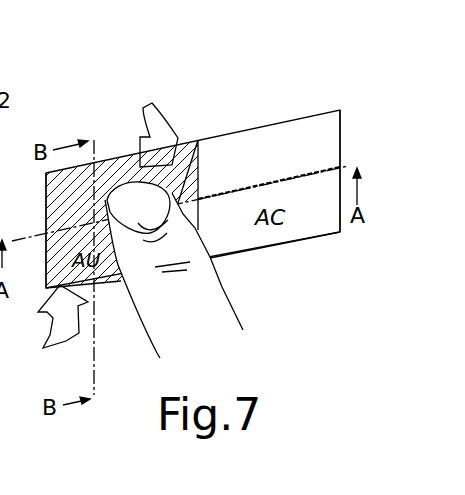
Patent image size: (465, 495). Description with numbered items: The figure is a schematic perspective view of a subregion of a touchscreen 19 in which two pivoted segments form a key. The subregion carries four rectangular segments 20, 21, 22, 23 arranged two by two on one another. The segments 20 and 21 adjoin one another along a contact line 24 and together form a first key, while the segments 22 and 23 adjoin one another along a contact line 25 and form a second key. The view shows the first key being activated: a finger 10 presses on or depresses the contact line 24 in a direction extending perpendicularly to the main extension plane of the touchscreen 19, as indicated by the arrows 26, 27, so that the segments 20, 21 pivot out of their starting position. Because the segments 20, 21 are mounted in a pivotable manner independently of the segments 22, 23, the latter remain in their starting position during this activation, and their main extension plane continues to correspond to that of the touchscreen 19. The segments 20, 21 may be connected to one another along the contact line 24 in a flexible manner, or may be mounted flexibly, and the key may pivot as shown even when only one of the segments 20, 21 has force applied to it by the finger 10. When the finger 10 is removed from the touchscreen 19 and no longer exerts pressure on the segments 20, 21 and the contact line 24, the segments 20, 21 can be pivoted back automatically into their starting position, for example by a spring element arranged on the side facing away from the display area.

The finger 10 is at (240, 314).
The touchscreen 19 is at (253, 128).
The segment 20 is at (102, 175).
The segment 21 is at (45, 288).
The segment 22 is at (331, 137).
The segment 23 is at (331, 235).
The contact line 24 is at (45, 218).
The contact line 25 is at (280, 183).
The arrow 26 is at (153, 123).
The arrow 27 is at (50, 347).